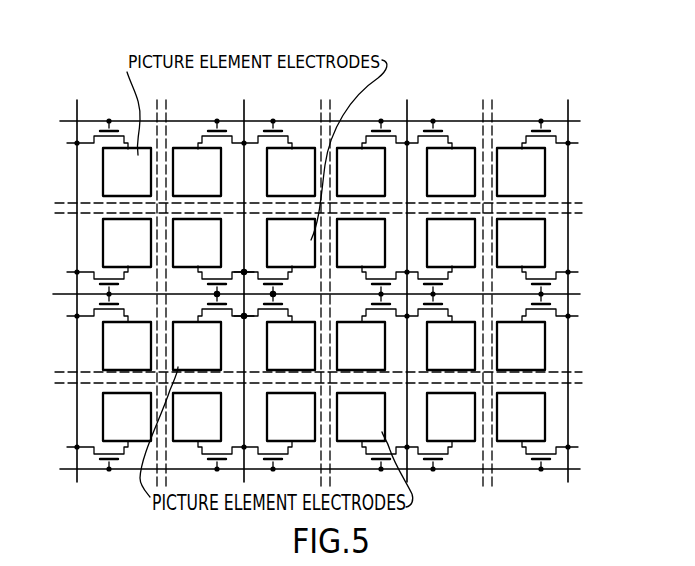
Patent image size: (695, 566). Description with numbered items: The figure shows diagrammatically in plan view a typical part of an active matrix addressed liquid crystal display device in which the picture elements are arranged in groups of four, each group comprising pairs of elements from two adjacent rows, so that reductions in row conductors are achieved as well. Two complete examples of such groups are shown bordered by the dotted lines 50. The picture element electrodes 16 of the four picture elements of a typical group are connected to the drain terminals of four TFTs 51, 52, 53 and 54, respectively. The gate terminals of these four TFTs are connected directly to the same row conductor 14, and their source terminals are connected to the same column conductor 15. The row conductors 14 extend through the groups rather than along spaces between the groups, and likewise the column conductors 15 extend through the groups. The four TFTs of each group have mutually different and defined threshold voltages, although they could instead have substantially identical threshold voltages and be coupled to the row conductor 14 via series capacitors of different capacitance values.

The row conductor 14 is at (68, 122).
The column conductor 15 is at (77, 109).
The picture element electrode 16 is at (203, 256).
The dotted lines 50 is at (462, 213).
The TFT 51 is at (206, 281).
The TFT 52 is at (283, 281).
The TFT 53 is at (205, 310).
The TFT 54 is at (284, 310).